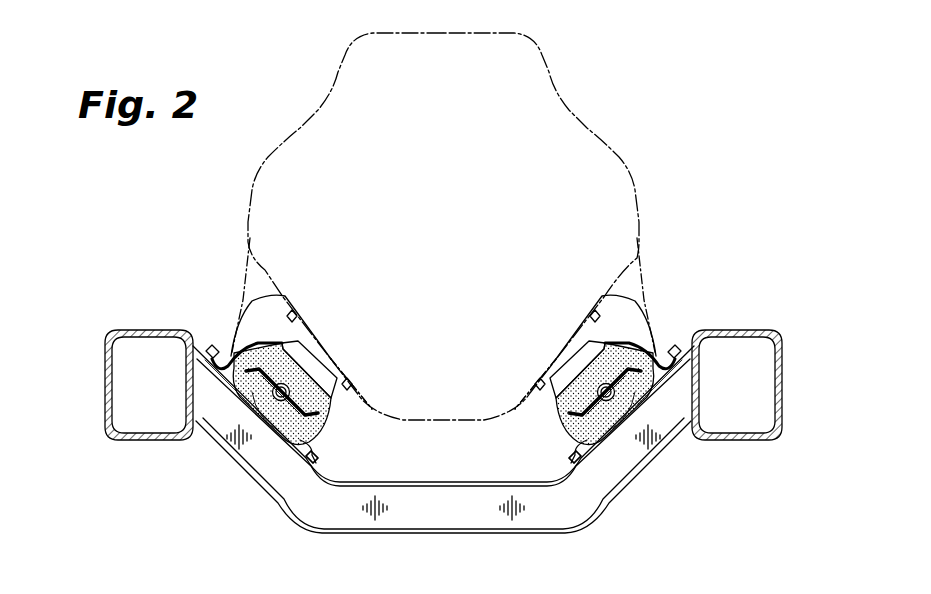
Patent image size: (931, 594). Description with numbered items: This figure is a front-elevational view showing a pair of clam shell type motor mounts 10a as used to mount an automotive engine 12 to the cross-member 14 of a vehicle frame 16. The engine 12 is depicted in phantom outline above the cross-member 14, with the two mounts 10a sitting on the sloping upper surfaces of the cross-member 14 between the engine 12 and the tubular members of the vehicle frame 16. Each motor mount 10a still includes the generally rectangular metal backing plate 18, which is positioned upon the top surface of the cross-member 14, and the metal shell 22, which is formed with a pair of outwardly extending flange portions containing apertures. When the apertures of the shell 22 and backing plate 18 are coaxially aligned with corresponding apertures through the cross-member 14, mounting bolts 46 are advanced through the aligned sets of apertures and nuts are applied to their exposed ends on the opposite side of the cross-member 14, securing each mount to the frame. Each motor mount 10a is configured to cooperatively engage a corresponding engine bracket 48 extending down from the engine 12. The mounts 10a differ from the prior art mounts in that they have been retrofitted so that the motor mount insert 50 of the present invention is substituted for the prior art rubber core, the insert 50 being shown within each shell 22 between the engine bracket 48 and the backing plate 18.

The automotive engine 12 is at (603, 126).
The cross-member 14 is at (449, 524).
The vehicle frame 16 is at (771, 322).
The backing plate 18 is at (285, 459).
The shell 22 is at (323, 345).
The mounting bolts 46 is at (319, 456).
The engine bracket 48 is at (268, 308).
The motor mount insert 50 is at (255, 415).
The motor mounts 10a is at (253, 337).